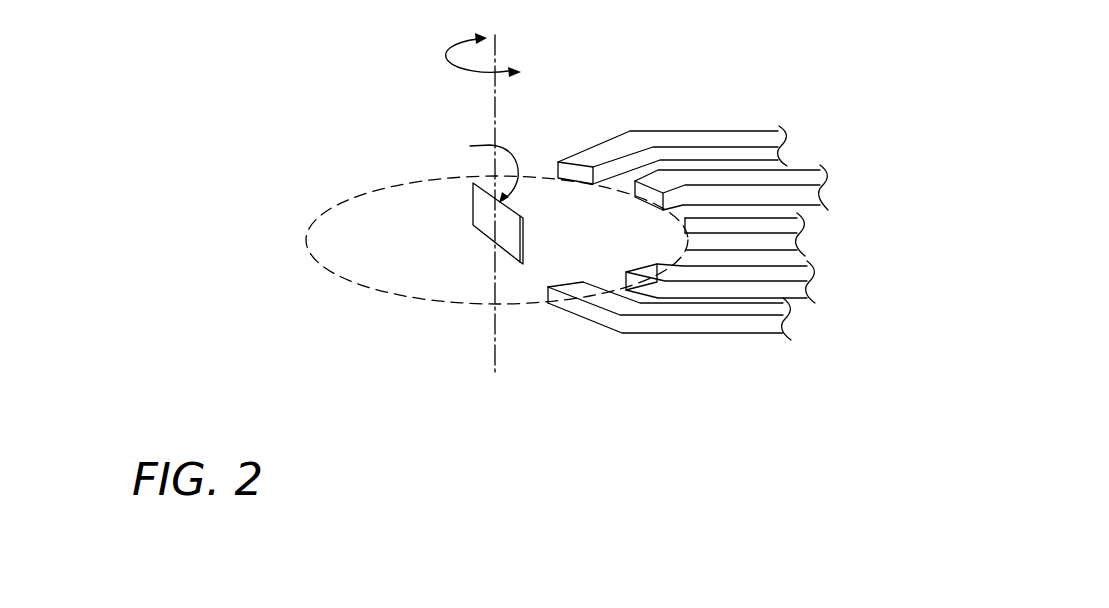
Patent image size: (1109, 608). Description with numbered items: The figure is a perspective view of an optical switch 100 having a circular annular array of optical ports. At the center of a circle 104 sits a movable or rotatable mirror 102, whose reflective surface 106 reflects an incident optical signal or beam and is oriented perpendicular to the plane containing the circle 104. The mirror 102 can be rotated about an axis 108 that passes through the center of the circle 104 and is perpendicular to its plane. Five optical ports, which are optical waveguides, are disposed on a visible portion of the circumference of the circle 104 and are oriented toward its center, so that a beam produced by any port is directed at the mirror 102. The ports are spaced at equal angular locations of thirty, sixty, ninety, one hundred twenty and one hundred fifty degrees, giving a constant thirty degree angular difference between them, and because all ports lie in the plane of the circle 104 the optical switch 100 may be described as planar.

The optical switch 100 is at (298, 40).
The mirror 102 is at (478, 225).
The circle 104 is at (306, 240).
The reflective surface 106 is at (469, 167).
The axis 108 is at (493, 101).